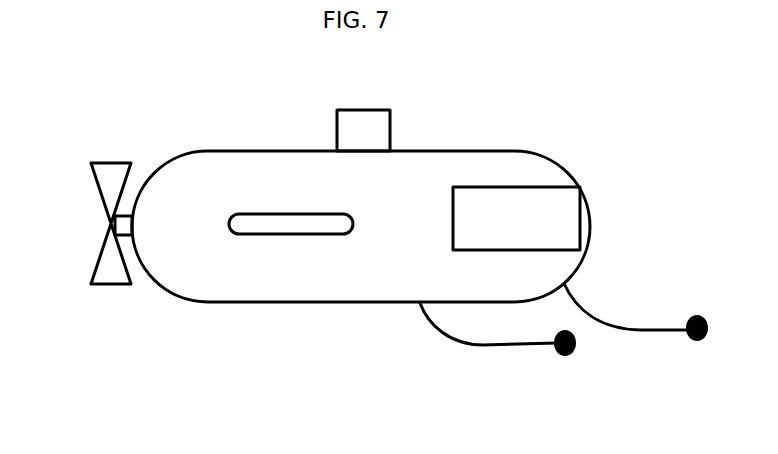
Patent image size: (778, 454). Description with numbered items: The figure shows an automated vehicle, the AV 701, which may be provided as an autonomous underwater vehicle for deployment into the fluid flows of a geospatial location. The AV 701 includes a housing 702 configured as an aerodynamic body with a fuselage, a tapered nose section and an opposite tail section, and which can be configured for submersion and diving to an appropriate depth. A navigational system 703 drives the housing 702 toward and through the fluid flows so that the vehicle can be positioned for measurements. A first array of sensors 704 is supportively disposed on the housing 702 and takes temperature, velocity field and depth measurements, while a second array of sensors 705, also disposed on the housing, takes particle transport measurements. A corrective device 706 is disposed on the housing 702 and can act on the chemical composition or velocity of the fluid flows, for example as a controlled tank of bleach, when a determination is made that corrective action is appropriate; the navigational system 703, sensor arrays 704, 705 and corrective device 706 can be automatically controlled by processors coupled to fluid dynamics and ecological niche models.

The automated vehicle (AV) 701 is at (383, 255).
The housing 702 is at (338, 270).
The navigational system 703 is at (352, 123).
The first array of sensors 704 is at (692, 342).
The second array of sensors 705 is at (557, 355).
The corrective device 706 is at (552, 217).